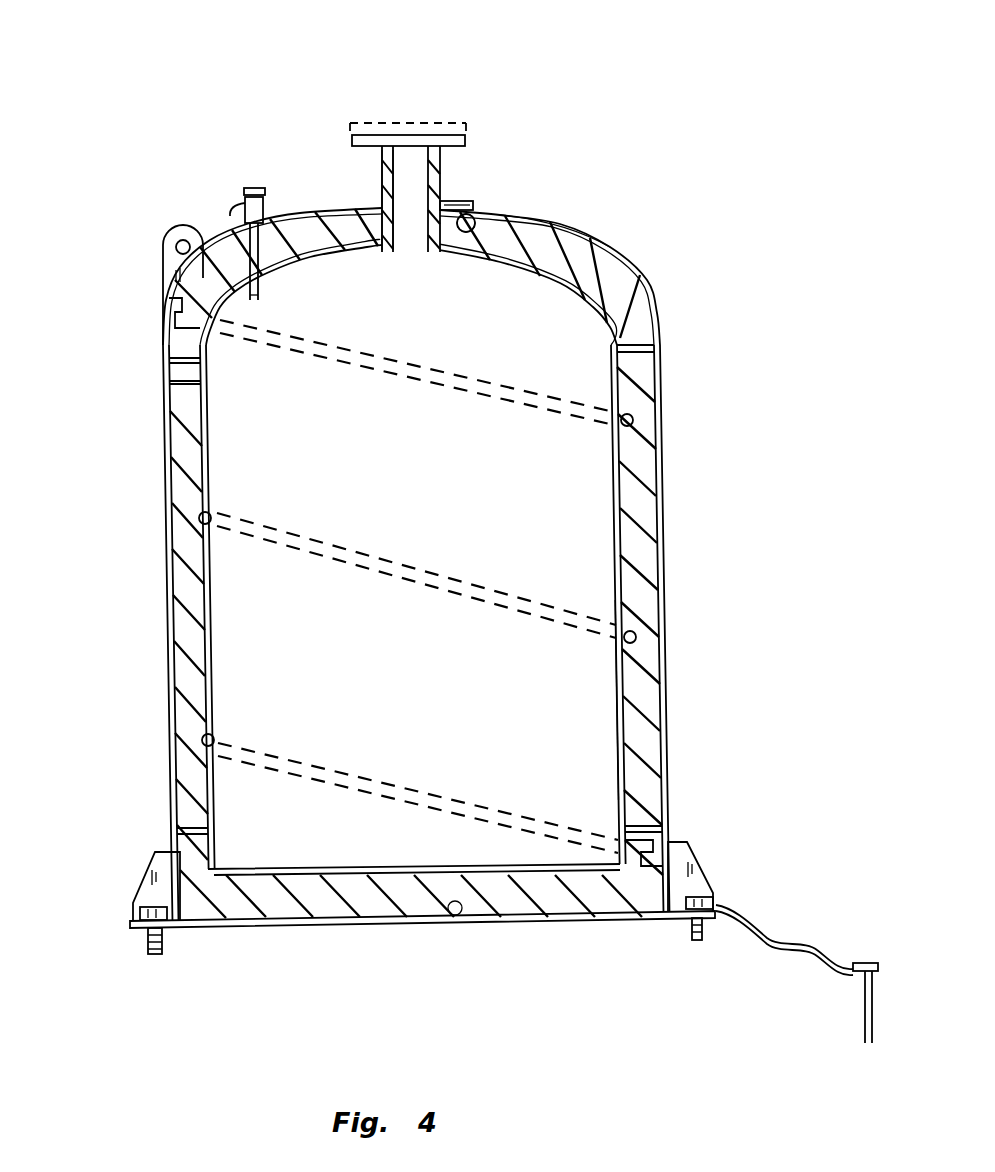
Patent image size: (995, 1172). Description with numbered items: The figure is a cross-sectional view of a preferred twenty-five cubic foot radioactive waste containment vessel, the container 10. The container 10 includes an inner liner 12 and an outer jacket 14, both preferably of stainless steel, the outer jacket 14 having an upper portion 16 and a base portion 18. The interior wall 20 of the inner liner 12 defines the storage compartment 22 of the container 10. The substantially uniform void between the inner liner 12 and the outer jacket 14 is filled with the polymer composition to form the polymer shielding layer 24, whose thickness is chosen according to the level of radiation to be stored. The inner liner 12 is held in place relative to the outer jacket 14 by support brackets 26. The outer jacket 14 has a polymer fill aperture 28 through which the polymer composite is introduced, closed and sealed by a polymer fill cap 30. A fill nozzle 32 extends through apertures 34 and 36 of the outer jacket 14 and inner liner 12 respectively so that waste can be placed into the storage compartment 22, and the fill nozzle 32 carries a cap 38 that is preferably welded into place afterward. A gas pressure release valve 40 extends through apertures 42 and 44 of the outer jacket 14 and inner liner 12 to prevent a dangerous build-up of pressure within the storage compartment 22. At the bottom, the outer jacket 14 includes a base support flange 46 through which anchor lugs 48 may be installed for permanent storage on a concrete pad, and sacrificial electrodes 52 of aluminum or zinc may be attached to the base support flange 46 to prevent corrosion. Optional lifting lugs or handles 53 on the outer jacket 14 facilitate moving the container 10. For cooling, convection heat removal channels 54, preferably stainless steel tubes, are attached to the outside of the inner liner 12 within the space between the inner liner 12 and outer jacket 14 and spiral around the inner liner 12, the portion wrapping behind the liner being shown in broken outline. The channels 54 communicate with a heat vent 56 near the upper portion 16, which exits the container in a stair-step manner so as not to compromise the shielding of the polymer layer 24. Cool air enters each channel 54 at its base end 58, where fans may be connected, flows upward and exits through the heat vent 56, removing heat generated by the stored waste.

The container 10 is at (526, 83).
The inner liner 12 is at (222, 470).
The outer jacket 14 is at (672, 360).
The upper portion 16 is at (598, 245).
The base portion 18 is at (520, 930).
The interior wall 20 is at (612, 706).
The storage compartment 22 is at (548, 530).
The polymer shielding layer 24 is at (577, 263).
The support brackets 26 is at (190, 381).
The polymer fill aperture 28 is at (474, 225).
The polymer fill cap 30 is at (460, 204).
The fill nozzle 32 is at (410, 132).
The aperture 34 is at (380, 235).
The aperture 36 is at (412, 256).
The cap 38 is at (455, 120).
The gas pressure release valve 40 is at (252, 187).
The aperture 42 is at (280, 218).
The aperture 44 is at (262, 303).
The base support flange 46 is at (142, 880).
The anchor lugs 48 is at (150, 945).
The sacrificial electrodes 52 is at (862, 1015).
The lifting lugs 53 is at (164, 236).
The convection heat removal channels 54 is at (428, 382).
The heat vent 56 is at (176, 318).
The base end 58 is at (662, 840).